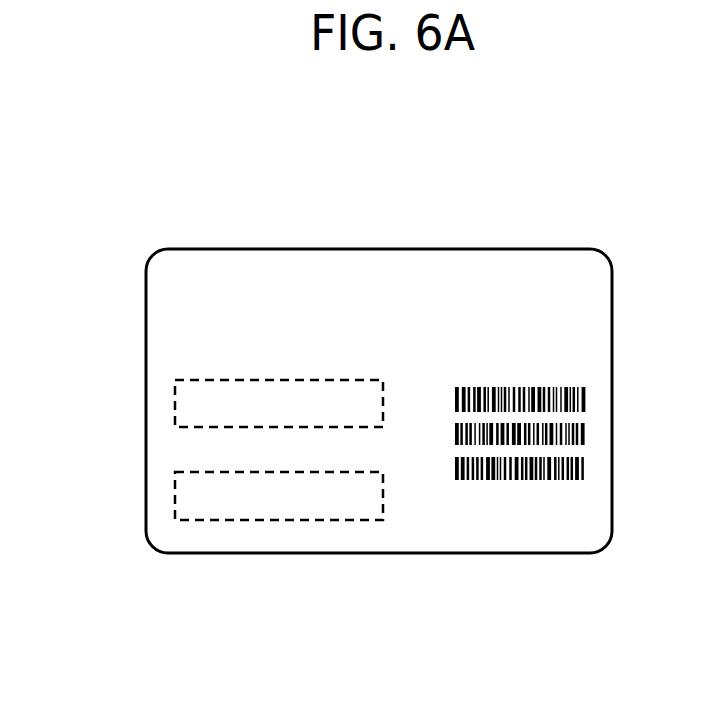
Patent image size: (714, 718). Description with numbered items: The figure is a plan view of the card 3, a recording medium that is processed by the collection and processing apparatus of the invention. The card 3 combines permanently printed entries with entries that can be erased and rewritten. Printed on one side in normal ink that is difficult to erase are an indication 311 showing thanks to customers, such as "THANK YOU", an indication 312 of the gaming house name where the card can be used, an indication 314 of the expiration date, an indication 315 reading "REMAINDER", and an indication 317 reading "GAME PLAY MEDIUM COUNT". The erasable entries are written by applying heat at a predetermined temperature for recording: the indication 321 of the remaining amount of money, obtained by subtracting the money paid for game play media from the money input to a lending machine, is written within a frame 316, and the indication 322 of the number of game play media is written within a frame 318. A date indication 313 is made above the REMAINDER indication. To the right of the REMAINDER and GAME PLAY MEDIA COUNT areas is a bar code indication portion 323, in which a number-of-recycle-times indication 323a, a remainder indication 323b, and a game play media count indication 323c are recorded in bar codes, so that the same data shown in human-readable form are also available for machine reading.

The card 3 is at (143, 210).
The indication for showing thanks to customers 311 is at (522, 263).
The indication of the gaming house name 312 is at (549, 326).
The date indication 313 is at (220, 313).
The indication of expiration date 314 is at (392, 535).
The indication "REMAINDER" 315 is at (172, 363).
The frame 316 is at (180, 413).
The indication "GAME PLAY MEDIUM COUNT" 317 is at (167, 460).
The frame 318 is at (205, 520).
The indication of the remaining amount of money 321 is at (223, 403).
The indication of the number of game play media 322 is at (235, 500).
The bar code indication portion 323 is at (549, 573).
The number-of-recycle-times indication 323a is at (593, 470).
The remainder indication 323b is at (593, 430).
The game play media count indication 323c is at (593, 397).